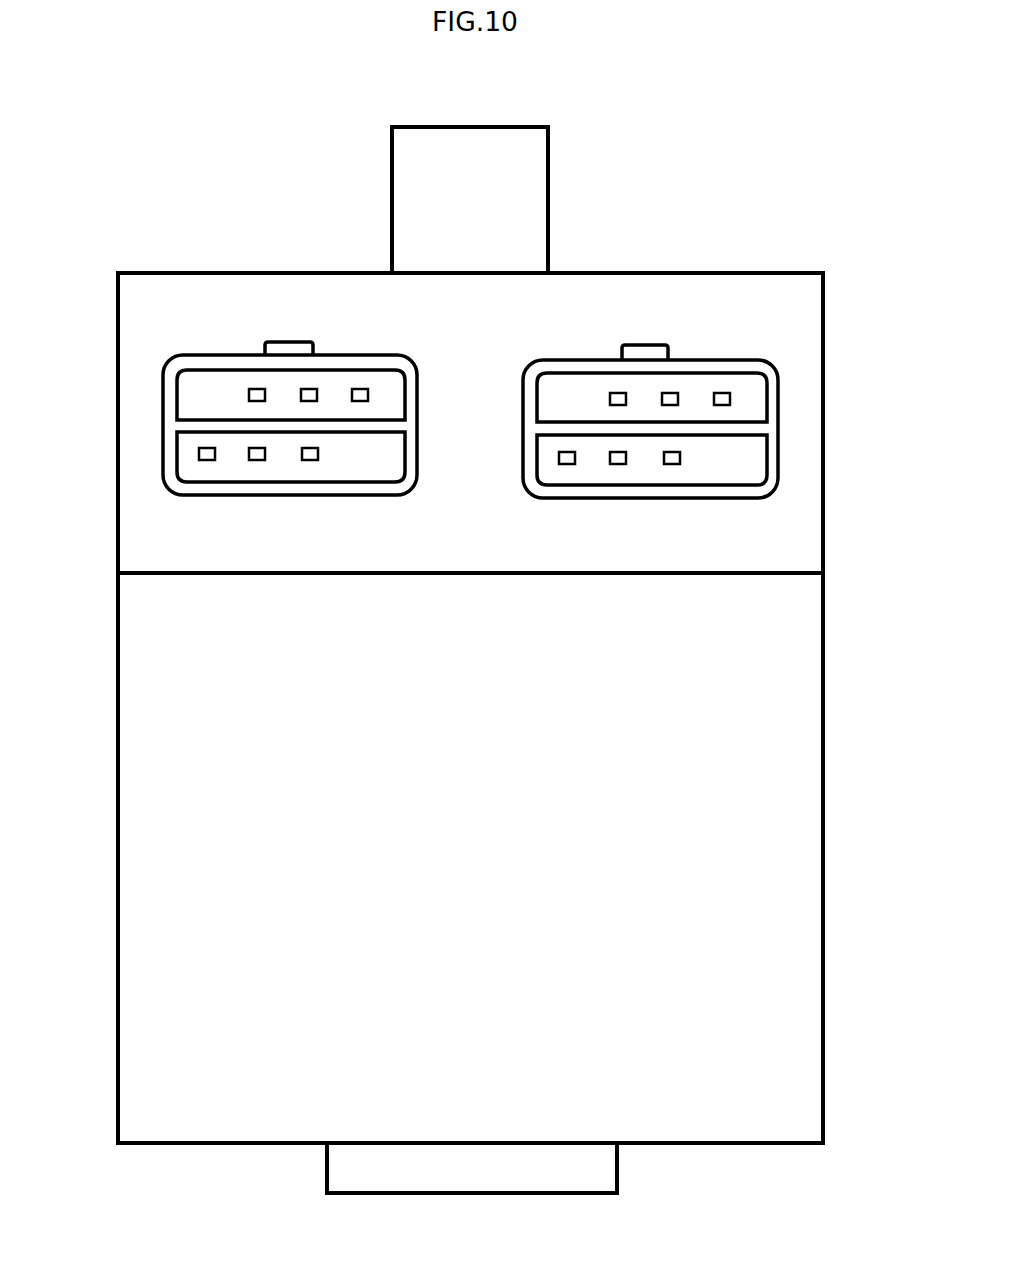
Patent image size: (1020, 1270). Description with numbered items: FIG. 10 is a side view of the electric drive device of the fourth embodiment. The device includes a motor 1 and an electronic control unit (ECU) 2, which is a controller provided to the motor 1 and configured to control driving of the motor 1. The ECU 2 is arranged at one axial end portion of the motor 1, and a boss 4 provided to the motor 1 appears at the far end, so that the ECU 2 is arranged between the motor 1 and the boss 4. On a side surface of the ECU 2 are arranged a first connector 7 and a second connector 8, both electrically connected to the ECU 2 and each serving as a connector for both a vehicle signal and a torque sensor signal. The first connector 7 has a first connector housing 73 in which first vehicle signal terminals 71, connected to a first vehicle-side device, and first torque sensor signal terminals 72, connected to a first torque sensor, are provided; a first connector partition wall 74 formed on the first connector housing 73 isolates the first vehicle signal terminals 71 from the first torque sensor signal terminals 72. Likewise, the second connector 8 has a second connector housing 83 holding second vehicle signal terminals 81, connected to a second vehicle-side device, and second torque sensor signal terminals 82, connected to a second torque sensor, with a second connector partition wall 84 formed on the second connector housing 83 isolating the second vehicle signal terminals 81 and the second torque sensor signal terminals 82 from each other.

The motor 1 is at (128, 832).
The electronic control unit (ECU) 2 is at (130, 300).
The boss 4 is at (548, 150).
The first connector 7 is at (235, 351).
The first vehicle signal terminals 71 is at (256, 392).
The first torque sensor signal terminals 72 is at (205, 455).
The first connector housing 73 is at (170, 388).
The first connector partition wall 74 is at (340, 425).
The second connector 8 is at (708, 340).
The second vehicle signal terminals 81 is at (722, 397).
The second torque sensor signal terminals 82 is at (672, 458).
The second connector housing 83 is at (773, 388).
The second connector partition wall 84 is at (583, 427).